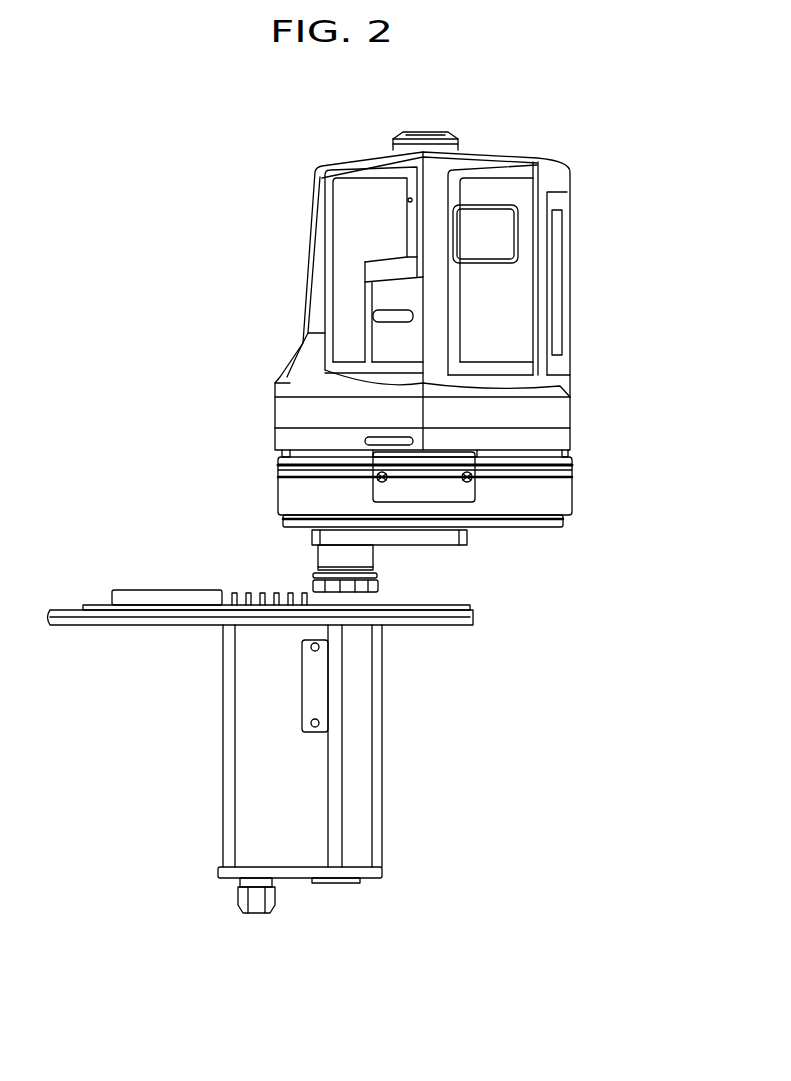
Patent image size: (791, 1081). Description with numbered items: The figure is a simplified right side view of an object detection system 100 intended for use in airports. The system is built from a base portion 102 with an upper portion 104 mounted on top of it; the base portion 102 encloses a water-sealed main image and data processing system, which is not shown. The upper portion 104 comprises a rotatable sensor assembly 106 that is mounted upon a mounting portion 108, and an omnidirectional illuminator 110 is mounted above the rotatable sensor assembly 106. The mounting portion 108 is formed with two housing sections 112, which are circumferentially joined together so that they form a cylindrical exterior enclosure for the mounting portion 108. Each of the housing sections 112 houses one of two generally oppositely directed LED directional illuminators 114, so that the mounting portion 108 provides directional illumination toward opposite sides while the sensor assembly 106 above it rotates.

The object detection system 100 is at (303, 140).
The base portion 102 is at (393, 733).
The upper portion 104 is at (582, 268).
The rotatable sensor assembly 106 is at (386, 302).
The mounting portion 108 is at (547, 542).
The omnidirectional illuminator 110 is at (410, 132).
The housing section 112 is at (320, 497).
The LED directional illuminator 114 is at (437, 488).